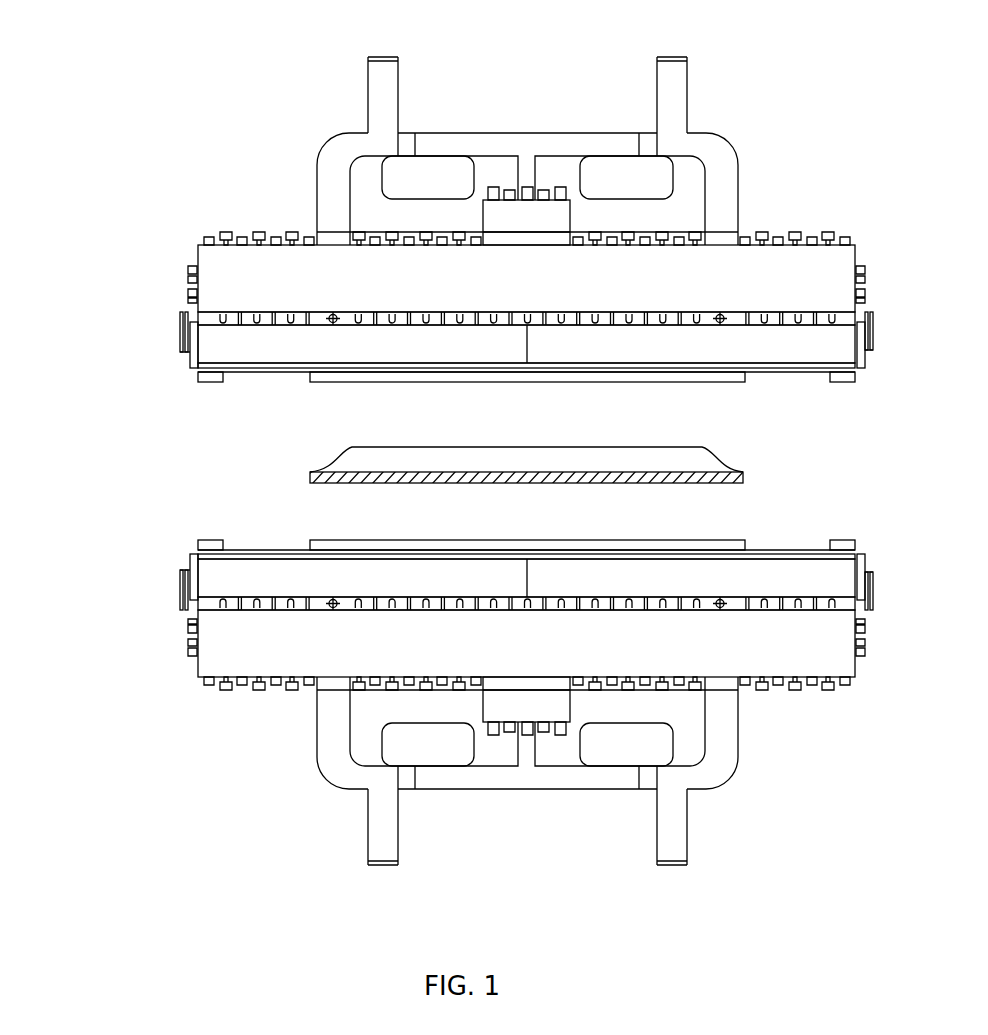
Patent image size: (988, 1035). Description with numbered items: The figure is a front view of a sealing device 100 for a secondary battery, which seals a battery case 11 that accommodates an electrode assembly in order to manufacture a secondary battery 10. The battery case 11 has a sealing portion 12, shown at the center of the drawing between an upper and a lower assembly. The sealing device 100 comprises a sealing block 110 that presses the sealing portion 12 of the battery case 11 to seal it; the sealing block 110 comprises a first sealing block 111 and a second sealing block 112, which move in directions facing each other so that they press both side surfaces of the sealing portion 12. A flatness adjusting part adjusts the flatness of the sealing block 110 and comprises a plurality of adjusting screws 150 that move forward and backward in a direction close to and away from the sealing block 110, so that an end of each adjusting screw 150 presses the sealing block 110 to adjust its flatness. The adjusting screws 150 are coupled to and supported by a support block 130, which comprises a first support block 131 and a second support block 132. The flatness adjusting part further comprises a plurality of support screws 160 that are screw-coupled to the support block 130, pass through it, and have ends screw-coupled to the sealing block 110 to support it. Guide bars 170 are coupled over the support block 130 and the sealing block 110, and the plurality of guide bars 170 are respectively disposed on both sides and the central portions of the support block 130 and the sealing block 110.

The sealing device 100 is at (470, 442).
The secondary battery 10 is at (516, 450).
The battery case 11 is at (357, 458).
The sealing portion 12 is at (310, 477).
The sealing block 110 is at (565, 461).
The first sealing block 111 is at (806, 356).
The second sealing block 112 is at (534, 548).
The support block 130 is at (441, 461).
The first support block 131 is at (190, 253).
The second support block 132 is at (474, 709).
The adjusting screw 150 is at (257, 232).
The support screw 160 is at (308, 232).
The guide bar 170 is at (201, 318).